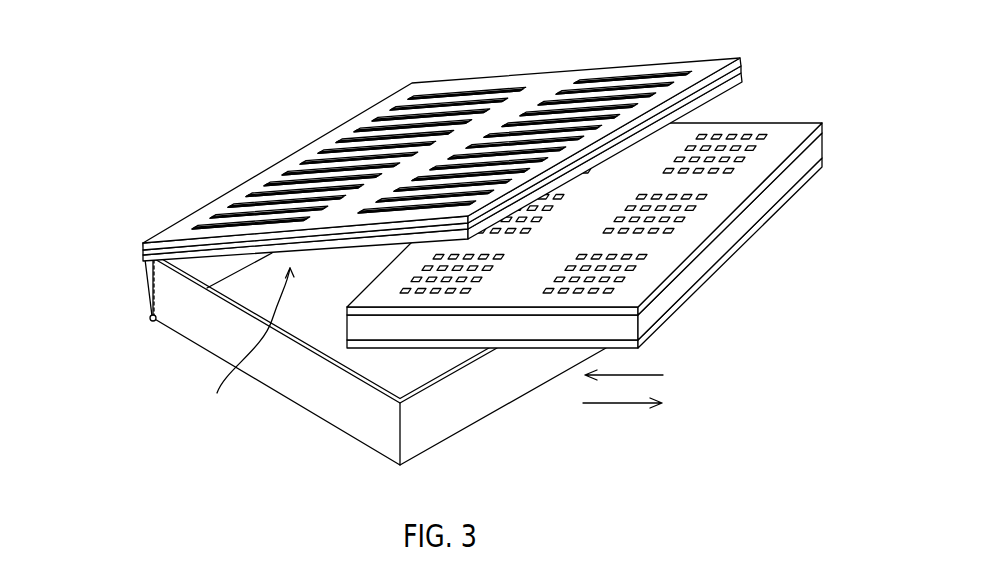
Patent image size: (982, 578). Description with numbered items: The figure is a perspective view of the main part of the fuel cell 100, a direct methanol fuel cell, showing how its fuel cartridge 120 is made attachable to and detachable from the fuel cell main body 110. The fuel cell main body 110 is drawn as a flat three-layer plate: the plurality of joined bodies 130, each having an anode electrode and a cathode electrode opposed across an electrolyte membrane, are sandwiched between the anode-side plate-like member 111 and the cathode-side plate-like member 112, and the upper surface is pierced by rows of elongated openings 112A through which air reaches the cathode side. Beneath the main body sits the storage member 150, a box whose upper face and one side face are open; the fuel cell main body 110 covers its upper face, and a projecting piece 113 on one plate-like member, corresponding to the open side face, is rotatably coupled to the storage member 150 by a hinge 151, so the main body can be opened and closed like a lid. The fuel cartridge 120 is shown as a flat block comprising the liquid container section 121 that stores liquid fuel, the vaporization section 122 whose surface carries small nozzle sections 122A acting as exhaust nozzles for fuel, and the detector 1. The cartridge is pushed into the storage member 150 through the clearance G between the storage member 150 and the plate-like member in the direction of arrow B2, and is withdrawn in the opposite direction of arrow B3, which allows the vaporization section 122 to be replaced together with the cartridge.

The fuel cell 100 is at (228, 133).
The fuel cell main body 110 is at (824, 37).
The anode-side plate-like member 111 is at (743, 78).
The cathode-side plate-like member 112 is at (742, 61).
The openings 112A is at (637, 74).
The projecting piece 113 is at (146, 299).
The joined body 130 is at (743, 72).
The fuel cartridge 120 is at (835, 247).
The liquid container section 121 is at (715, 255).
The vaporization section 122 is at (745, 207).
The nozzle sections 122A is at (760, 150).
The detector 1 is at (678, 300).
The storage member 150 is at (330, 423).
The hinge 151 is at (153, 322).
The clearance G is at (253, 347).
The arrow B2 (insertion direction) B2 is at (647, 375).
The arrow B3 (removal direction) B3 is at (622, 403).